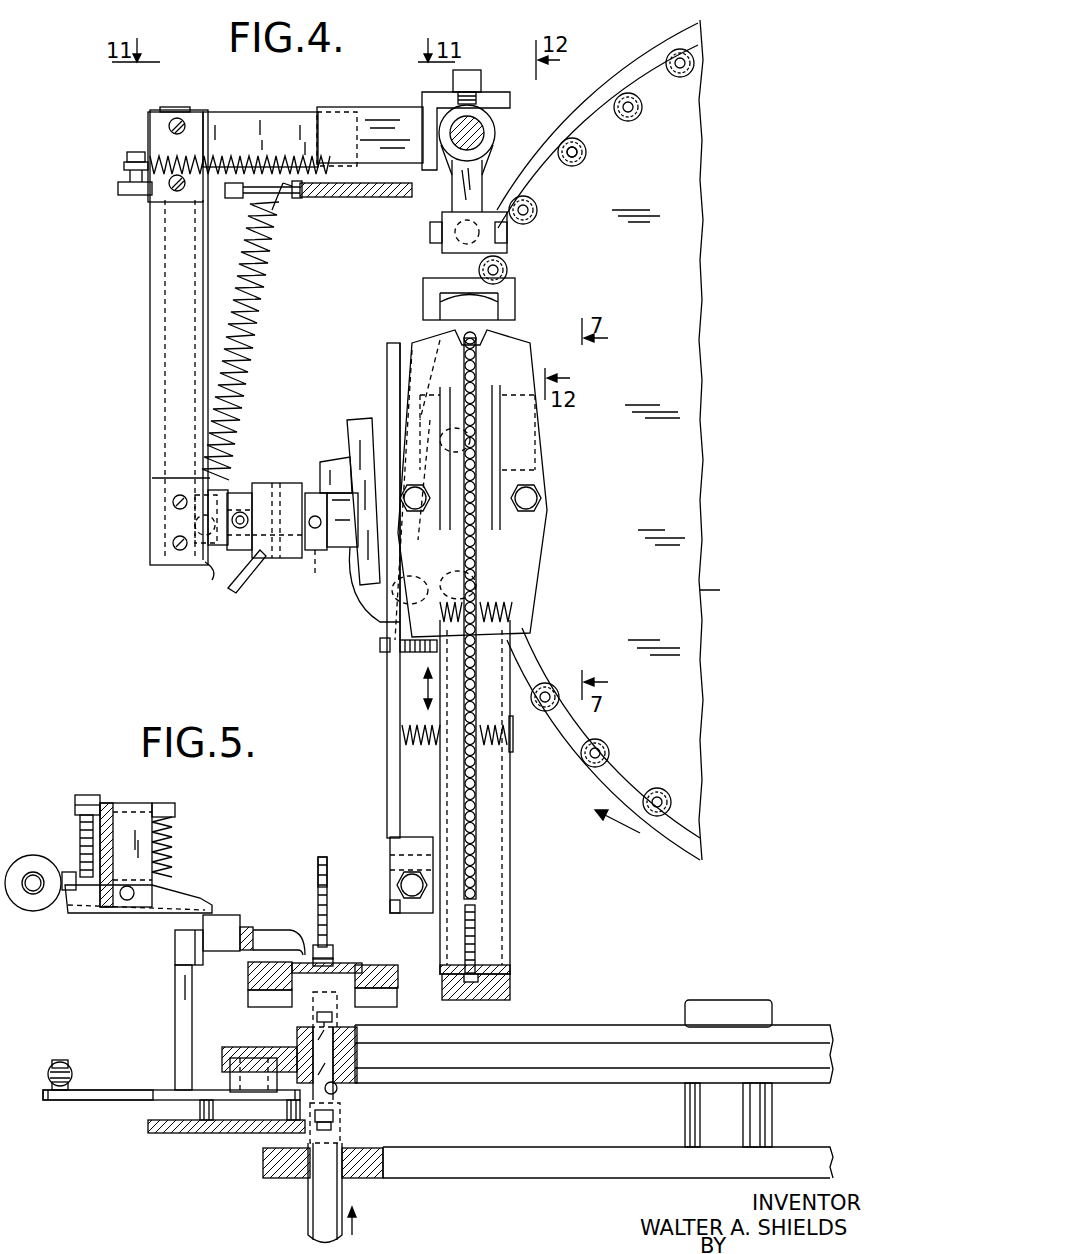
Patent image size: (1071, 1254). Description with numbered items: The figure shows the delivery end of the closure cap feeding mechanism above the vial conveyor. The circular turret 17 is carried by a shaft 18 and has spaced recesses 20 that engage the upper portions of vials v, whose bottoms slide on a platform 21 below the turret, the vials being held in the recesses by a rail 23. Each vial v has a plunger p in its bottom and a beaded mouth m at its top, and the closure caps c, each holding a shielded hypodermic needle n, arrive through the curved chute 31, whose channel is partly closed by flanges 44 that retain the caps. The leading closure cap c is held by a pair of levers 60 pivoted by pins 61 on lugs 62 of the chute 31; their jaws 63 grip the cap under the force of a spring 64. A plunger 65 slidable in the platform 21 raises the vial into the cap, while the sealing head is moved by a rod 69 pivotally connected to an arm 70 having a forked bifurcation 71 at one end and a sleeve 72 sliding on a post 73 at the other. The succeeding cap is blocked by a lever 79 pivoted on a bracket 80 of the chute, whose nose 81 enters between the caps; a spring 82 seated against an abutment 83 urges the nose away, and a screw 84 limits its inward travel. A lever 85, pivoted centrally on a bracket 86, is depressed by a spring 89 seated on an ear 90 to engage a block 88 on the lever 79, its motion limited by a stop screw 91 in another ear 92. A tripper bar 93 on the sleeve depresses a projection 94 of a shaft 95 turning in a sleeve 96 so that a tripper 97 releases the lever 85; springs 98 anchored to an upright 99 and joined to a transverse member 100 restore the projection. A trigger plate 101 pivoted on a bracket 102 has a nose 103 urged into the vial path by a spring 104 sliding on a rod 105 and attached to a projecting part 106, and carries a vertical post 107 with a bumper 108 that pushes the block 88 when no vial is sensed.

In FIG. 4, the circular turret 17 is at (703, 606).
In FIG. 5, the circular turret 17 is at (597, 1025).
In FIG. 5, the shaft 18 is at (723, 1000).
In FIG. 4, the recesses 20 is at (608, 760).
In FIG. 5, the recesses 20 is at (337, 1090).
In FIG. 5, the platform 21 is at (510, 1180).
In FIG. 4, the rail 23 is at (680, 838).
In FIG. 5, the rail 23 is at (298, 1040).
In FIG. 4, the curved chute 31 is at (490, 891).
In FIG. 5, the curved chute 31 is at (375, 966).
In FIG. 4, the flanges 44 is at (507, 968).
In FIG. 5, the flanges 44 is at (340, 960).
In FIG. 4, the levers 60 is at (532, 575).
In FIG. 4, the pins 61 is at (535, 498).
In FIG. 5, the lugs 62 is at (397, 996).
In FIG. 4, the jaws 63 is at (480, 345).
In FIG. 5, the jaws 63 is at (250, 980).
In FIG. 4, the spring 64 is at (515, 614).
In FIG. 5, the plunger 65 is at (312, 1217).
In FIG. 4, the rod 69 is at (452, 210).
In FIG. 4, the arm 70 is at (443, 265).
In FIG. 4, the forked bifurcation 71 is at (422, 309).
In FIG. 4, the sleeve 72 is at (496, 141).
In FIG. 4, the post 73 is at (478, 133).
In FIG. 4, the lever 79 is at (395, 772).
In FIG. 5, the lever 79 is at (252, 933).
In FIG. 4, the bracket 80 is at (437, 905).
In FIG. 5, the nose 81 is at (312, 952).
In FIG. 4, the spring 82 is at (402, 737).
In FIG. 4, the abutment 83 is at (513, 740).
In FIG. 4, the screw 84 is at (380, 646).
In FIG. 4, the lever 85 is at (345, 550).
In FIG. 5, the lever 85 is at (195, 895).
In FIG. 4, the bracket 86 is at (258, 480).
In FIG. 5, the bracket 86 is at (130, 805).
In FIG. 4, the block 88 is at (362, 422).
In FIG. 5, the block 88 is at (228, 915).
In FIG. 4, the spring 89 is at (316, 555).
In FIG. 5, the spring 89 is at (174, 844).
In FIG. 5, the ear 90 is at (176, 811).
In FIG. 4, the stop screw 91 is at (242, 510).
In FIG. 5, the stop screw 91 is at (80, 832).
In FIG. 5, the ear 92 is at (78, 806).
In FIG. 4, the tripper bar 93 is at (378, 108).
In FIG. 4, the projection 94 is at (250, 112).
In FIG. 4, the shaft 95 is at (178, 110).
In FIG. 5, the shaft 95 is at (33, 905).
In FIG. 4, the sleeve 96 is at (160, 355).
In FIG. 4, the tripper 97 is at (205, 523).
In FIG. 5, the tripper 97 is at (68, 880).
In FIG. 4, the springs 98 is at (228, 175).
In FIG. 4, the upright 99 is at (376, 197).
In FIG. 4, the transverse member 100 is at (118, 190).
In FIG. 4, the plate 101 is at (302, 478).
In FIG. 5, the plate 101 is at (147, 1090).
In FIG. 5, the bracket 102 is at (185, 1133).
In FIG. 4, the nose 103 is at (383, 430).
In FIG. 4, the spring 104 is at (262, 318).
In FIG. 5, the spring 104 is at (72, 1068).
In FIG. 4, the rod 105 is at (285, 198).
In FIG. 4, the projecting part 106 is at (215, 568).
In FIG. 5, the projecting part 106 is at (90, 1100).
In FIG. 5, the vertical post 107 is at (175, 1000).
In FIG. 4, the bumper 108 is at (333, 456).
In FIG. 5, the bumper 108 is at (175, 950).
In FIG. 4, the closure caps c is at (574, 166).
In FIG. 5, the closure caps c is at (332, 958).
In FIG. 4, the shielded hypodermic needle n is at (580, 152).
In FIG. 5, the shielded hypodermic needle n is at (318, 875).
In FIG. 5, the beaded mouth m is at (315, 1016).
In FIG. 5, the plunger p is at (335, 1118).
In FIG. 5, the vials v is at (335, 1052).